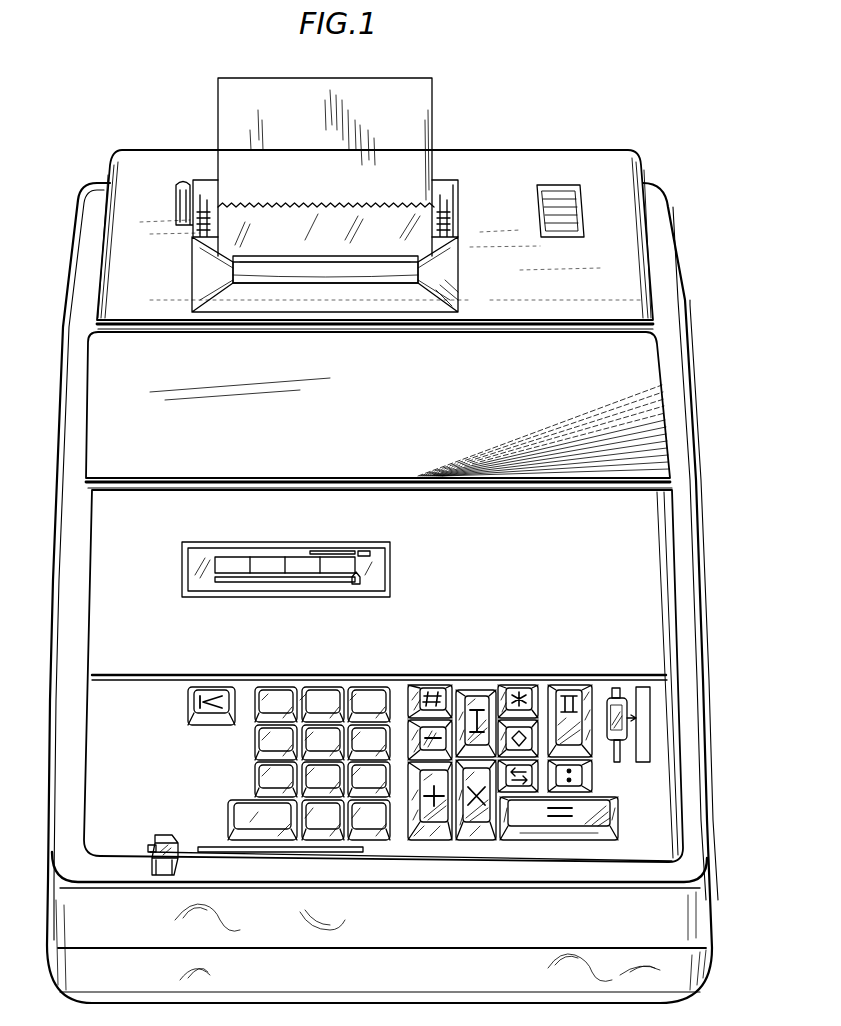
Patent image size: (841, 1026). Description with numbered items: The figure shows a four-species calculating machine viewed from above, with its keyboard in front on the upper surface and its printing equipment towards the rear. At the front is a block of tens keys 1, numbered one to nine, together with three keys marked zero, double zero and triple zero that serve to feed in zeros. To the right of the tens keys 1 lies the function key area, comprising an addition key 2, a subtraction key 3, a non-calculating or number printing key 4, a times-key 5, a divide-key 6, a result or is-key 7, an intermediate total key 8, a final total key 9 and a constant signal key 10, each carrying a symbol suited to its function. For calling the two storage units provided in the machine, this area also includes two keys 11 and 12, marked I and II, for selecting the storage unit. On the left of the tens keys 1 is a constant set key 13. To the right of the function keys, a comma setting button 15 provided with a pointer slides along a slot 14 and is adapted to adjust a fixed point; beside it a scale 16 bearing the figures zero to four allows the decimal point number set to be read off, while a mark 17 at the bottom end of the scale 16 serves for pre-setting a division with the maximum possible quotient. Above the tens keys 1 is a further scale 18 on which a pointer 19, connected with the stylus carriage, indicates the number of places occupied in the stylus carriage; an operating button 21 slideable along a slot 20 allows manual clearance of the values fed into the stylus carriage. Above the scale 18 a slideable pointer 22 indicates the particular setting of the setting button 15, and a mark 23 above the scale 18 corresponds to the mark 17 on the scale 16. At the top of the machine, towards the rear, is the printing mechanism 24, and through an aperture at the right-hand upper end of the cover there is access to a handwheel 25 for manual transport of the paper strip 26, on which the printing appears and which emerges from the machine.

The tens keys 1 is at (242, 806).
The addition key 2 is at (430, 842).
The subtraction key 3 is at (416, 744).
The non-calculating or number printing key 4 is at (421, 688).
The times-key 5 is at (480, 842).
The divide-key 6 is at (581, 776).
The result or is-key 7 is at (610, 822).
The intermediate total key 8 is at (533, 730).
The final total key 9 is at (517, 688).
The constant signal key 10 is at (538, 762).
The storage unit selection key 11 is at (472, 696).
The storage unit selection key 12 is at (561, 690).
The constant set key 13 is at (190, 703).
The slot 14 is at (618, 764).
The comma setting button 15 is at (617, 698).
The scale 16 is at (648, 692).
The mark 17 is at (646, 760).
The scale 18 is at (287, 566).
The pointer 19 is at (357, 586).
The slot 20 is at (199, 847).
The operating button 21 is at (160, 840).
The slideable pointer 22 is at (330, 552).
The mark 23 is at (367, 552).
The printing mechanism 24 is at (296, 266).
The handwheel 25 is at (582, 212).
The paper strip 26 is at (434, 127).